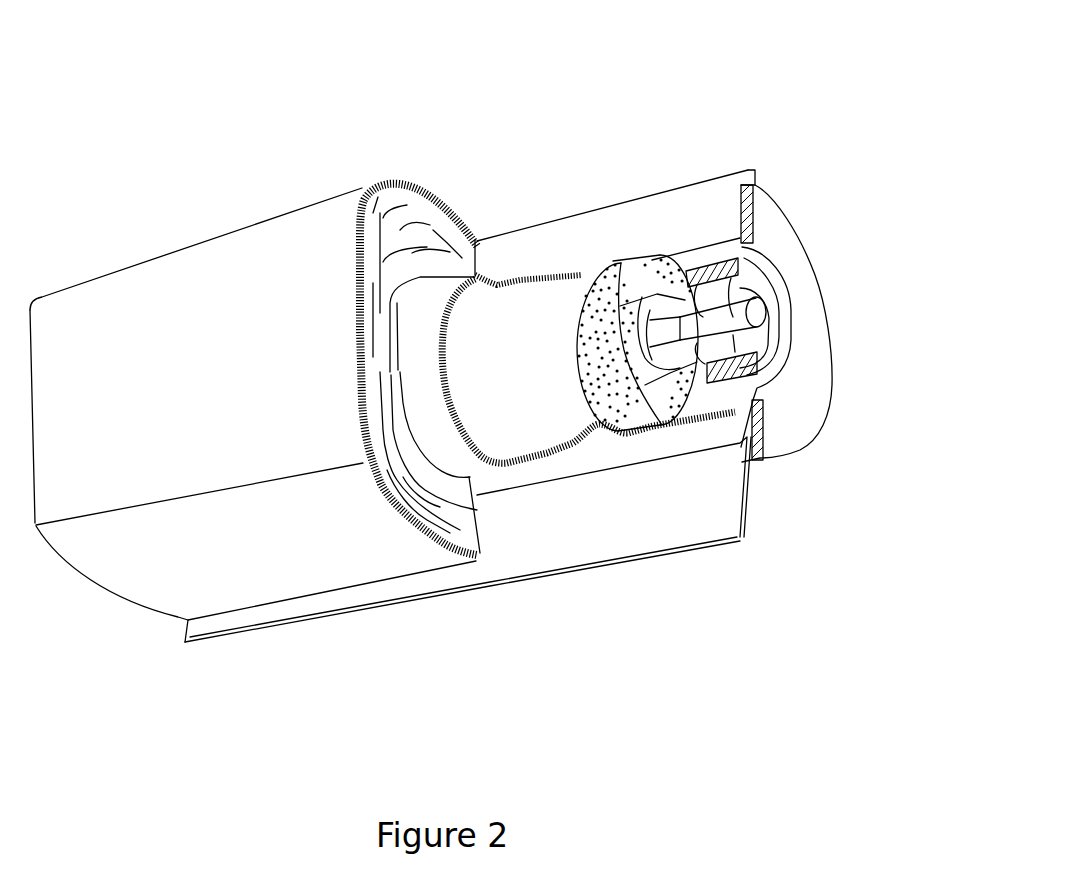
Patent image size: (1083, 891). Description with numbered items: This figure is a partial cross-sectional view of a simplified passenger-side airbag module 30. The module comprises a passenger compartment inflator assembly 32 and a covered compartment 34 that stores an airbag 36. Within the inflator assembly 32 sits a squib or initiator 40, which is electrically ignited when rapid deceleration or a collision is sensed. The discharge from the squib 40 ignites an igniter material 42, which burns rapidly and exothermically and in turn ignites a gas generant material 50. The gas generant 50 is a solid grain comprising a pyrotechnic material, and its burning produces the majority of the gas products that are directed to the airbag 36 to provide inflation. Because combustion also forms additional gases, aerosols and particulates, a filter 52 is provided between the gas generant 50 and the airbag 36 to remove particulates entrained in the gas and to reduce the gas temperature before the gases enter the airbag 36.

The airbag module 30 is at (508, 160).
The passenger compartment inflator assembly 32 is at (708, 240).
The covered compartment 34 is at (125, 278).
The airbag 36 is at (457, 530).
The squib 40 is at (765, 312).
The igniter material 42 is at (668, 340).
The gas generant material 50 is at (735, 365).
The filter 52 is at (620, 263).